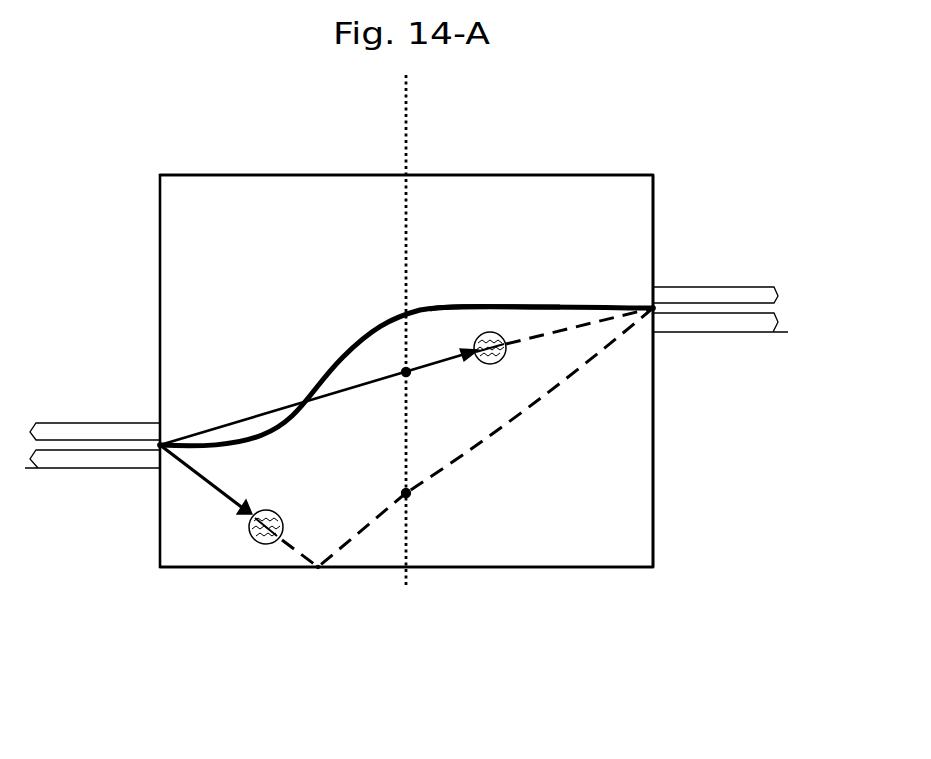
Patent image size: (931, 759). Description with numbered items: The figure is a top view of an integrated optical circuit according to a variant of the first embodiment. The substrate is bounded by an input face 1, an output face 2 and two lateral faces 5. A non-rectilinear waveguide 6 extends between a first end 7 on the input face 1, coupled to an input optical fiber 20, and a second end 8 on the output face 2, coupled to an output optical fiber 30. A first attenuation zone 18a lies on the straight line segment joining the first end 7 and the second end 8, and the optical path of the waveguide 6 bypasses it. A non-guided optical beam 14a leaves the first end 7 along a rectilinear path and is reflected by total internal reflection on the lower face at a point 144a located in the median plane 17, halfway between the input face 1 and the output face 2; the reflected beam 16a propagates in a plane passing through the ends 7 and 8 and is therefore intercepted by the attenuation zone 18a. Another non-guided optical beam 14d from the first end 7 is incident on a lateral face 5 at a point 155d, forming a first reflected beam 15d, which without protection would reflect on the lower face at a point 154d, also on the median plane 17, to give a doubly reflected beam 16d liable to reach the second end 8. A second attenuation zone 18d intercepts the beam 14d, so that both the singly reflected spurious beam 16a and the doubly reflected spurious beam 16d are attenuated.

The input face 1 is at (160, 192).
The output face 2 is at (653, 503).
The lateral face 5 is at (607, 175).
The waveguide 6 is at (508, 305).
The first end 7 is at (168, 450).
The second end 8 is at (653, 308).
The non-guided optical beam 14a is at (238, 420).
The non-guided optical beam 14d is at (215, 490).
The reflection point 144a is at (406, 372).
The first reflected beam 15d is at (362, 535).
The reflection point 154d is at (406, 493).
The incidence point 155d is at (318, 567).
The reflected beam 16a is at (462, 362).
The doubly reflected beam 16d is at (578, 367).
The median plane 17 is at (406, 126).
The first attenuation zone 18a is at (488, 367).
The second attenuation zone 18d is at (272, 543).
The input optical fiber 20 is at (117, 423).
The output optical fiber 30 is at (708, 288).